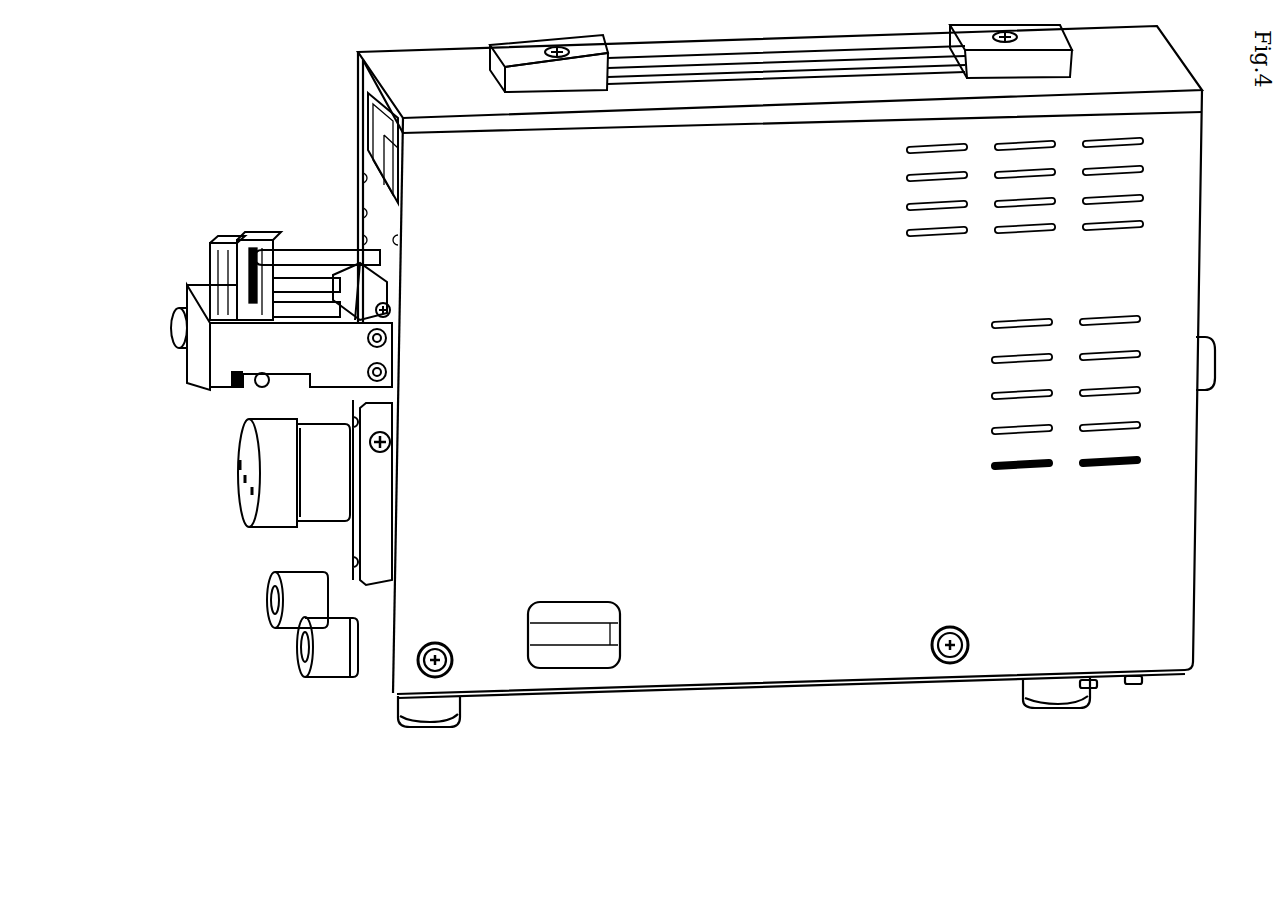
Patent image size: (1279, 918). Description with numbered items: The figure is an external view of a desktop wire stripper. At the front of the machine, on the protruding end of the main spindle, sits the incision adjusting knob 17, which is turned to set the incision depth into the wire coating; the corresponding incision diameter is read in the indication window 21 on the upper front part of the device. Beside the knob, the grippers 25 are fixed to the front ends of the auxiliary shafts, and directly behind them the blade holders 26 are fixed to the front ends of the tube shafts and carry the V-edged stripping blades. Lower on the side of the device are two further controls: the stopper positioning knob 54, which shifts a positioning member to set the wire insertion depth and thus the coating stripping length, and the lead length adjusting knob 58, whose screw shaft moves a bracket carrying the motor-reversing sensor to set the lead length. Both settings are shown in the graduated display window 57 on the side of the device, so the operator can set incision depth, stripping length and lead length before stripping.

The incision adjusting knob 17 is at (275, 495).
The indication window 21 is at (365, 117).
The gripper 25 is at (217, 233).
The blade holder 26 is at (250, 225).
The stopper positioning knob 54 is at (283, 613).
The display window 57 is at (615, 672).
The lead length adjusting knob 58 is at (320, 658).